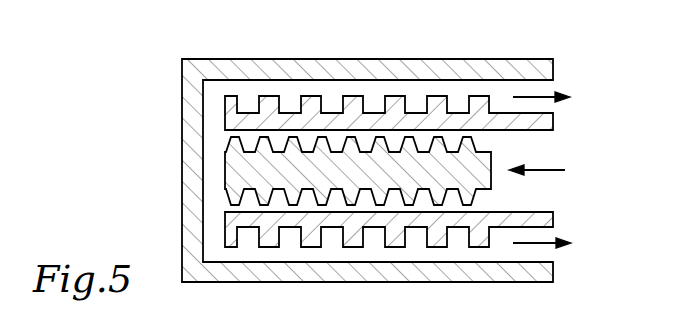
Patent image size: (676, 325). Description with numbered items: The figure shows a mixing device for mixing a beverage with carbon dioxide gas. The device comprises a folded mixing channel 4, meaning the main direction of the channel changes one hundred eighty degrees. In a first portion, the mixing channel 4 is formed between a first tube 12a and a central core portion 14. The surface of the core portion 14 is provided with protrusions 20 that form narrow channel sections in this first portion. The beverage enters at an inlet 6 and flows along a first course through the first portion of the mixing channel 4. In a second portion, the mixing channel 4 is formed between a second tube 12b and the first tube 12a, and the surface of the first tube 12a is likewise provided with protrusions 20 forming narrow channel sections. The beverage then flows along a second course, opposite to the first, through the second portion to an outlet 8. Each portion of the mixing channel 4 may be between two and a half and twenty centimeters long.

The second tube 12b is at (433, 73).
The first tube 12a is at (508, 124).
The mixing channel 4 is at (244, 209).
The core portion 14 is at (243, 172).
The protrusions 20 is at (311, 99).
The outlet 8 is at (543, 108).
The inlet 6 is at (543, 191).